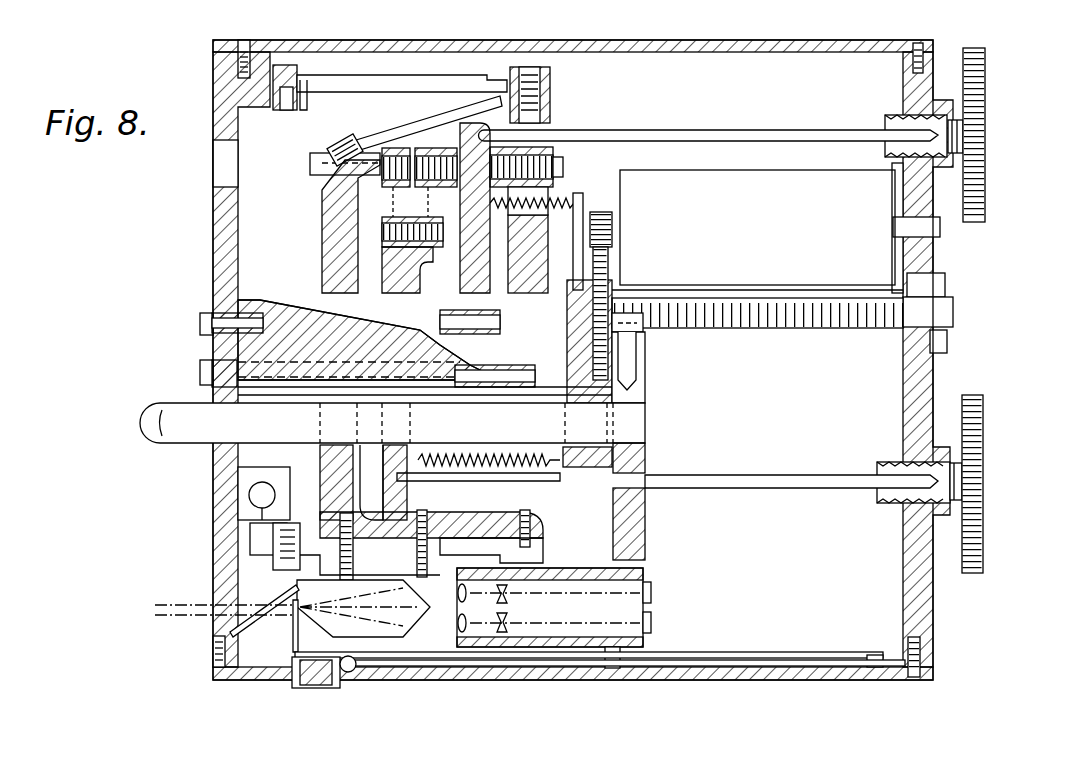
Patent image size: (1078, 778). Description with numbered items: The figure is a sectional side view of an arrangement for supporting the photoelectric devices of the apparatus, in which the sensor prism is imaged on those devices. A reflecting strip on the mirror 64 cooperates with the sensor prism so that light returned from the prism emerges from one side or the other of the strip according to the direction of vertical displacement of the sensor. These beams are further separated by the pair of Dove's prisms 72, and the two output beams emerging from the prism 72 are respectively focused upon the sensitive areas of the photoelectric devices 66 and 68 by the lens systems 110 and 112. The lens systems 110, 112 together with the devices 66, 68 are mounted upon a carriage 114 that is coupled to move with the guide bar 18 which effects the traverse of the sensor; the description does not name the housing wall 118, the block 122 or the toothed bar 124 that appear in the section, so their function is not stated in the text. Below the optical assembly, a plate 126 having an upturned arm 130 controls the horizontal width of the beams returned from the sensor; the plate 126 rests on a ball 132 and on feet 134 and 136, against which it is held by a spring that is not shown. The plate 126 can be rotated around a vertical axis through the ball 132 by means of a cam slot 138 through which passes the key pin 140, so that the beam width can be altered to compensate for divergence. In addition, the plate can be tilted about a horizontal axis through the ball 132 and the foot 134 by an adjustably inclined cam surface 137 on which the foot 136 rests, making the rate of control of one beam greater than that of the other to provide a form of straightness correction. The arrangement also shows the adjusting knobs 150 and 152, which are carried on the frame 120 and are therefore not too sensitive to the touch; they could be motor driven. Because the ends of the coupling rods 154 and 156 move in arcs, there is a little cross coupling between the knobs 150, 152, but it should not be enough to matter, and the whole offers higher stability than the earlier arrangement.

The guide assembly 18 is at (183, 410).
The mirror 64 is at (270, 598).
The photoelectric device 66 is at (652, 592).
The photoelectric device 68 is at (652, 624).
The Dove's prisms 72 is at (410, 632).
The lens system 110 is at (520, 588).
The lens system 112 is at (500, 635).
The carriage 114 is at (645, 526).
The housing left wall 118 is at (213, 120).
The frame 120 is at (912, 68).
The spring block 122 is at (645, 458).
The rack 124 is at (800, 332).
The plate 126 is at (800, 662).
The upturned arm 130 is at (293, 625).
The ball 132 is at (385, 672).
The foot 134 is at (880, 665).
The foot 136 is at (300, 688).
The cam surface 137 is at (350, 672).
The cam slot 138 is at (730, 662).
The key pin 140 is at (614, 670).
The adjusting knob 150 is at (983, 528).
The adjusting knob 152 is at (985, 178).
The coupling rod 154 is at (770, 495).
The coupling rod 156 is at (690, 110).